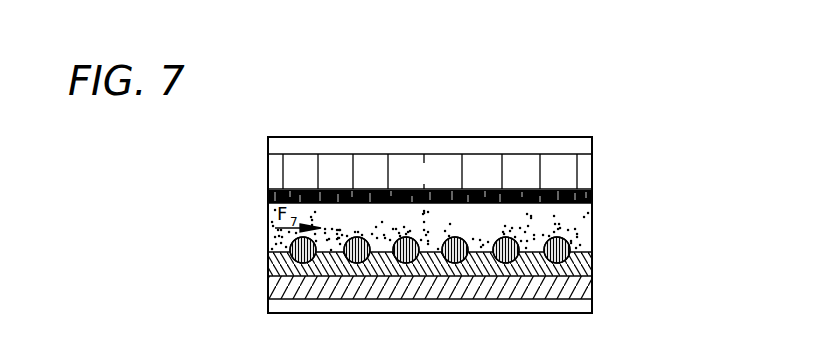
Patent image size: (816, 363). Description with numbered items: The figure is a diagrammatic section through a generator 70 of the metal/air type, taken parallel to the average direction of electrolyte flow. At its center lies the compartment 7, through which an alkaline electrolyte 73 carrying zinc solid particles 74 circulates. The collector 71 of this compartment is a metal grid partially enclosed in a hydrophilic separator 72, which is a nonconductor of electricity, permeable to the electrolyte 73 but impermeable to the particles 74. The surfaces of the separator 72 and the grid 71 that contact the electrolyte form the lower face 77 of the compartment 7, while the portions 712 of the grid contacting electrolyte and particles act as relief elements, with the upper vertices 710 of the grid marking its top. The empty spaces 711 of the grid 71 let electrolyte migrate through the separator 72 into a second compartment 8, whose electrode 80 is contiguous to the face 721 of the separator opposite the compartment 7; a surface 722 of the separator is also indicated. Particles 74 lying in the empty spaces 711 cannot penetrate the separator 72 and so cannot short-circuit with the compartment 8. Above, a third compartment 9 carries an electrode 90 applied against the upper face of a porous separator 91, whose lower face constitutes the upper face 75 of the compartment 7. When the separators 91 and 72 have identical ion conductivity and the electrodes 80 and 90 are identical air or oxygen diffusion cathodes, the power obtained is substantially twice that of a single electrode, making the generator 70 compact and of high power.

The generator 70 is at (614, 158).
The compartment 9 is at (375, 146).
The electrode 90 is at (440, 183).
The porous separator 91 is at (593, 195).
The electrolyte 73 is at (581, 225).
The upper surface of support layer 722 is at (593, 248).
The hydrophilic separator 72 is at (593, 263).
The face of the separator 721 is at (533, 298).
The electrode 80 is at (399, 298).
The compartment 8 is at (330, 313).
The compartment 7 is at (550, 228).
The solid particles 74 is at (342, 222).
The empty spaces of the grid 711 is at (386, 236).
The upper vertices of the grid 710 is at (418, 222).
The lower face 77 is at (458, 222).
The upper face 75 is at (457, 204).
The portions of the grid 712 is at (521, 222).
The collector 71 is at (582, 220).